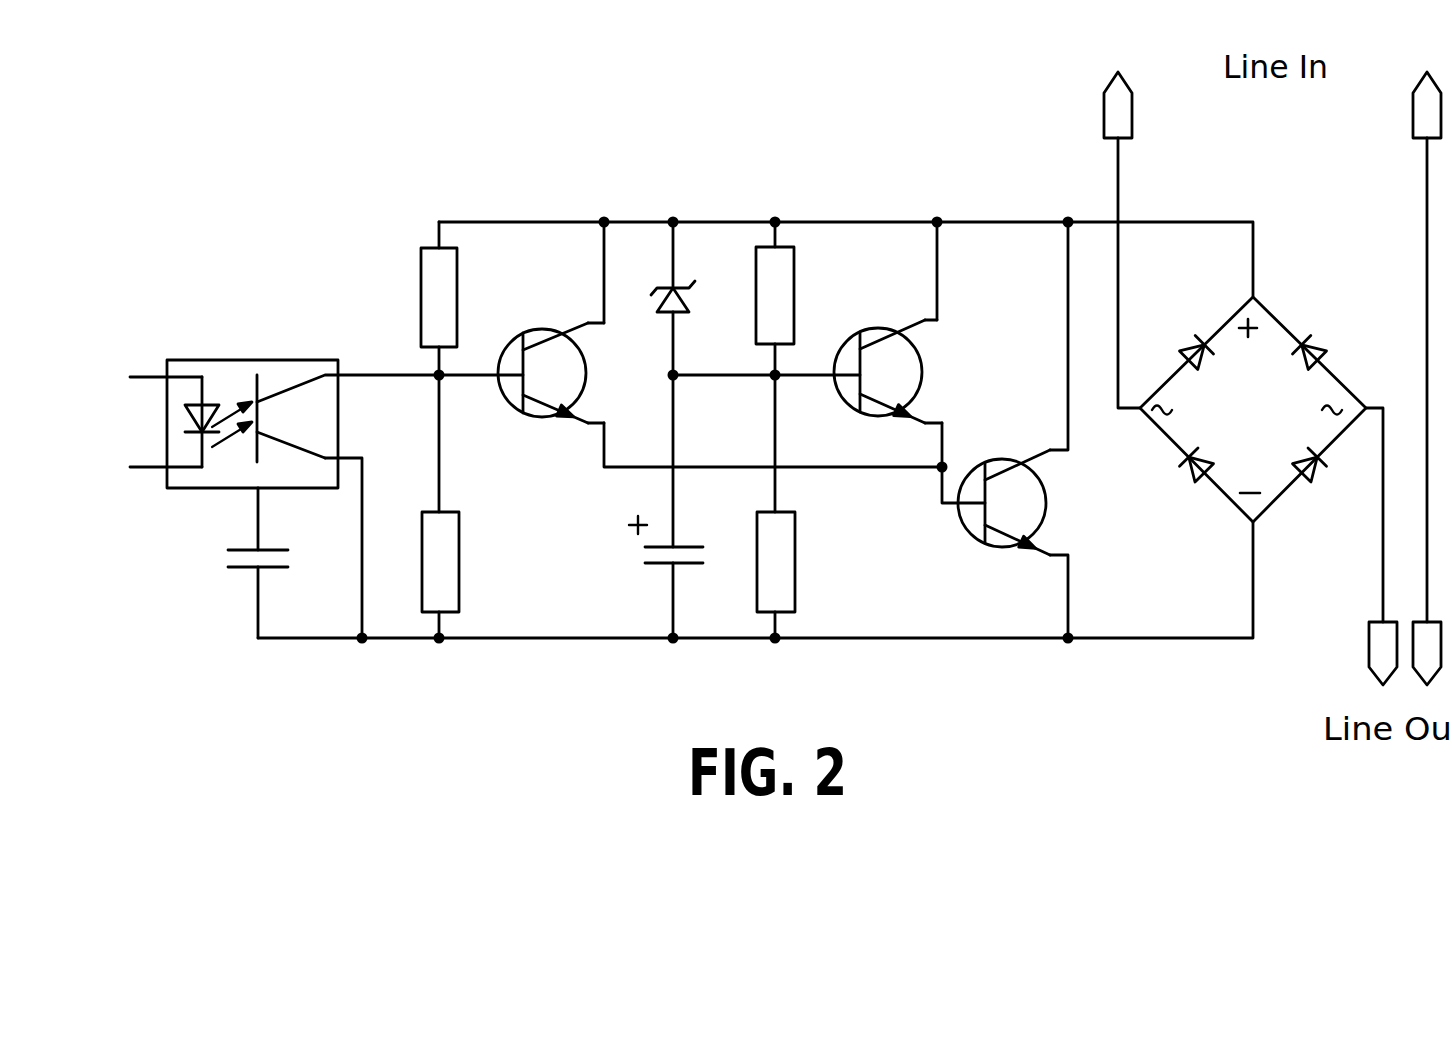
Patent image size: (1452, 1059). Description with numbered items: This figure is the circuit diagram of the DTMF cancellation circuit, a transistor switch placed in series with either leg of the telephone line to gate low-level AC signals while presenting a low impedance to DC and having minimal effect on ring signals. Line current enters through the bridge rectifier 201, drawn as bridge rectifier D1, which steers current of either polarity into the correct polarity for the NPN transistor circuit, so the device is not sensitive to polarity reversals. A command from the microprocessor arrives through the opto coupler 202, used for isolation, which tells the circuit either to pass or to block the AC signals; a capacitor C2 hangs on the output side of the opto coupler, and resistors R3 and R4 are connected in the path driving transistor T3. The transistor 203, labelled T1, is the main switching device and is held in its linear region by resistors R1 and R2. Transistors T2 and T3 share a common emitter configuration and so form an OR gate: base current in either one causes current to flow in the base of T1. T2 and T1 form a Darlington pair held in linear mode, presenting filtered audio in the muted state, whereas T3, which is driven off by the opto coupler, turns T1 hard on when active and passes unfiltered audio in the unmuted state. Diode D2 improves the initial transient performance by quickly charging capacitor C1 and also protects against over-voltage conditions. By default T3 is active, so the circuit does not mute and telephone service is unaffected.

The bridge rectifier 201 is at (1253, 365).
The opto coupler U1 202 is at (251, 360).
The transistor T1 203 is at (1057, 490).
The capacitor C1 is at (674, 506).
The capacitor C2 is at (265, 563).
The resistor R1 is at (797, 298).
The resistor R2 is at (800, 506).
The resistor R3 is at (463, 298).
The resistor R4 is at (464, 506).
The transistor T1 is at (976, 434).
The transistor T2 is at (879, 355).
The transistor T3 is at (542, 355).
The bridge rectifier D1 is at (1302, 305).
The diode D2 is at (684, 298).